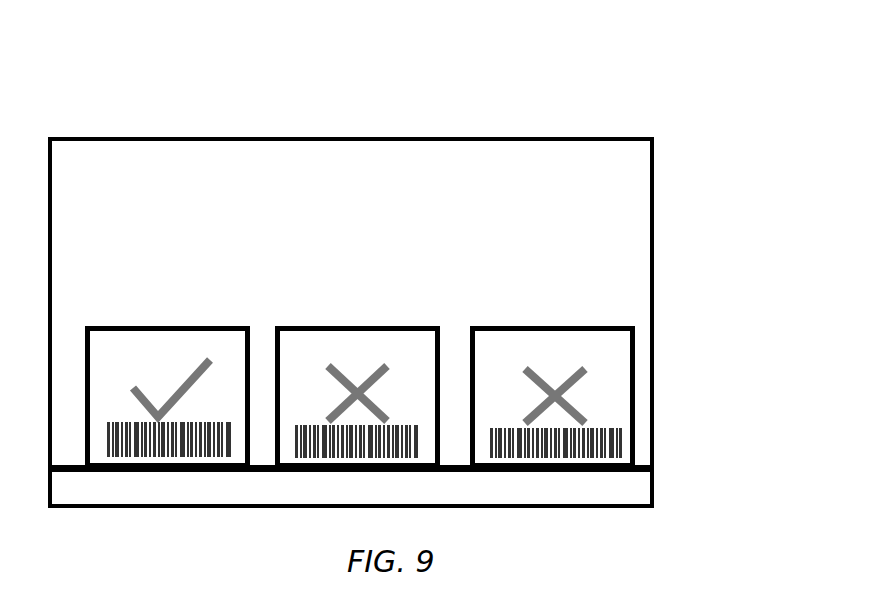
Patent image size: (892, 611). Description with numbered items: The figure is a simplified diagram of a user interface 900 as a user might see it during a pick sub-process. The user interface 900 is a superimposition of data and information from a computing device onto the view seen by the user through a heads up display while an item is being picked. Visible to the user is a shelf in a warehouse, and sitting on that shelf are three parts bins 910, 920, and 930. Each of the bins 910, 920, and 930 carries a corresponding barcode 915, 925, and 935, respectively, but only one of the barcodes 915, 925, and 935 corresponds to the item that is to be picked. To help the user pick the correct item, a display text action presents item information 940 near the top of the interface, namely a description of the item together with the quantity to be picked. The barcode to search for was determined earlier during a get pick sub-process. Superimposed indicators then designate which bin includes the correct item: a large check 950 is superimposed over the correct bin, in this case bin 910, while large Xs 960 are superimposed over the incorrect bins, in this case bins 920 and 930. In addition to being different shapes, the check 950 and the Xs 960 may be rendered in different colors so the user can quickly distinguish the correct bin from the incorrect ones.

The user interface 900 is at (97, 87).
The item information text 940 is at (378, 150).
The parts bin 910 is at (158, 325).
The parts bin 920 is at (357, 325).
The parts bin 930 is at (548, 325).
The barcode 915 is at (143, 462).
The barcode 925 is at (335, 460).
The barcode 935 is at (528, 458).
The check 950 is at (178, 392).
The Xs 960 is at (357, 383).